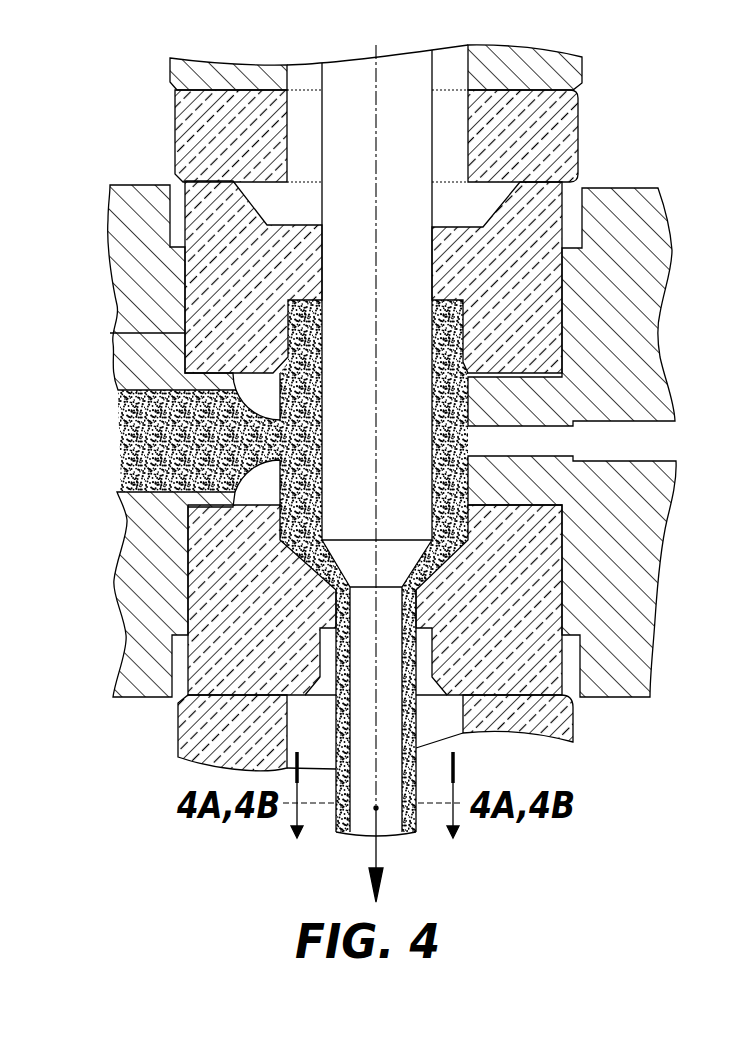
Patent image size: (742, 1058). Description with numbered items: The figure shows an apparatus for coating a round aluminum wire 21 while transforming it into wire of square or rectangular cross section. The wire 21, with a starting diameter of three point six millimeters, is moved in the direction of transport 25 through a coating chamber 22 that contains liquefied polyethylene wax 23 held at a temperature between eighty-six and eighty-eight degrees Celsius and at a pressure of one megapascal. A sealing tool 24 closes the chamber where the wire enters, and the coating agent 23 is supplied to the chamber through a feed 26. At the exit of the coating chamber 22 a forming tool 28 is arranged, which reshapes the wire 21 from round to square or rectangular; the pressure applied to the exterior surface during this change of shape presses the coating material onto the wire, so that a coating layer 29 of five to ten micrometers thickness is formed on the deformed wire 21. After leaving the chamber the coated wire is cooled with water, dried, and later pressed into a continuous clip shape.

The wire 21 is at (336, 168).
The coating chamber 22 is at (287, 353).
The polyethylene wax/coating agent 23 is at (126, 421).
The sealing tool 24 is at (560, 228).
The direction of transport 25 is at (372, 858).
The feed 26 is at (135, 508).
The forming tool 28 is at (560, 570).
The coating layer 29 is at (340, 819).